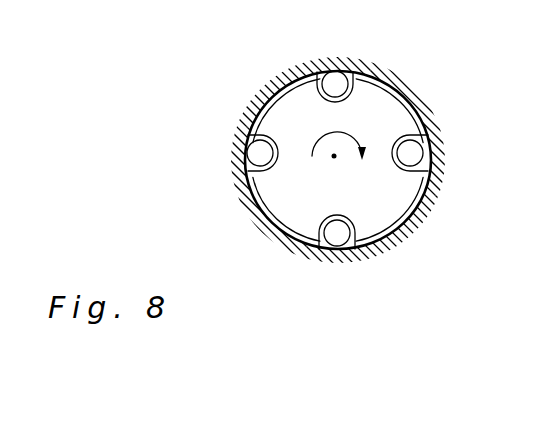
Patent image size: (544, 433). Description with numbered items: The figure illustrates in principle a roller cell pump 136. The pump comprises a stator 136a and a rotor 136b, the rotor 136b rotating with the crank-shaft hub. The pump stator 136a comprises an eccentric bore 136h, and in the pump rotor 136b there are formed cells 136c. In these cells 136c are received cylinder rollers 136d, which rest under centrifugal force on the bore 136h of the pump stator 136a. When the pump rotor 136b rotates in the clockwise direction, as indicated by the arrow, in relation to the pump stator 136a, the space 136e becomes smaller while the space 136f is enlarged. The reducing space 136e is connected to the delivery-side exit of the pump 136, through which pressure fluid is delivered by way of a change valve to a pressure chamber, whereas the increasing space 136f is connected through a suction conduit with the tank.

The roller cell pump 136 is at (272, 168).
The stator 136a is at (280, 74).
The rotor 136b is at (287, 186).
The cells 136c is at (248, 133).
The cylinder rollers 136d is at (345, 73).
The space 136e is at (270, 233).
The space 136f is at (422, 130).
The eccentric bore 136h is at (384, 232).